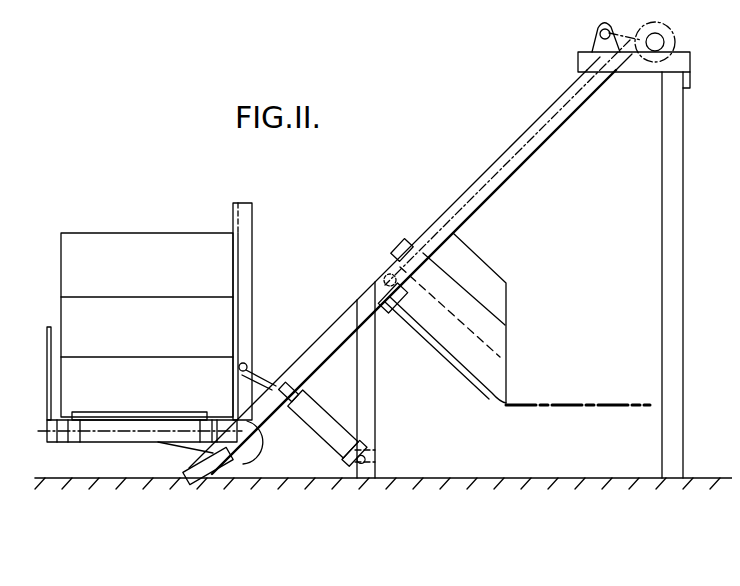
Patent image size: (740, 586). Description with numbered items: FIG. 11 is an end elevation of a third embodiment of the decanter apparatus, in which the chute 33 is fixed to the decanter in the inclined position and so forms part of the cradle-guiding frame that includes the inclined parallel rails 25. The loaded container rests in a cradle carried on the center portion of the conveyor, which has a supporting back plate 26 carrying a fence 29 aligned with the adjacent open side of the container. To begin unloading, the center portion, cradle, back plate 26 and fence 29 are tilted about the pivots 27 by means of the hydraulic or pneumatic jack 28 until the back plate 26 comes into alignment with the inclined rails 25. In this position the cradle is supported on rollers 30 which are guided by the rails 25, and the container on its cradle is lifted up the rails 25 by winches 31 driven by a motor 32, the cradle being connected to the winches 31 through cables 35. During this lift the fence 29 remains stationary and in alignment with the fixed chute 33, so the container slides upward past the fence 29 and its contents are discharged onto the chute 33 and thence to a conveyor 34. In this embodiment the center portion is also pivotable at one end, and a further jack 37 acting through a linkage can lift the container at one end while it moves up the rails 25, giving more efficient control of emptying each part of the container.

The inclined parallel rails 25 is at (592, 96).
The supporting back plate 26 is at (253, 276).
The pivots 27 is at (255, 453).
The hydraulic or pneumatic jack 28 is at (318, 440).
The fence 29 is at (233, 212).
The rollers 30 is at (386, 278).
The winches 31 is at (673, 34).
The motor 32 is at (595, 30).
The chute 33 is at (508, 343).
The conveyor 34 is at (600, 402).
The cables 35 is at (556, 137).
The jack 37 is at (326, 405).